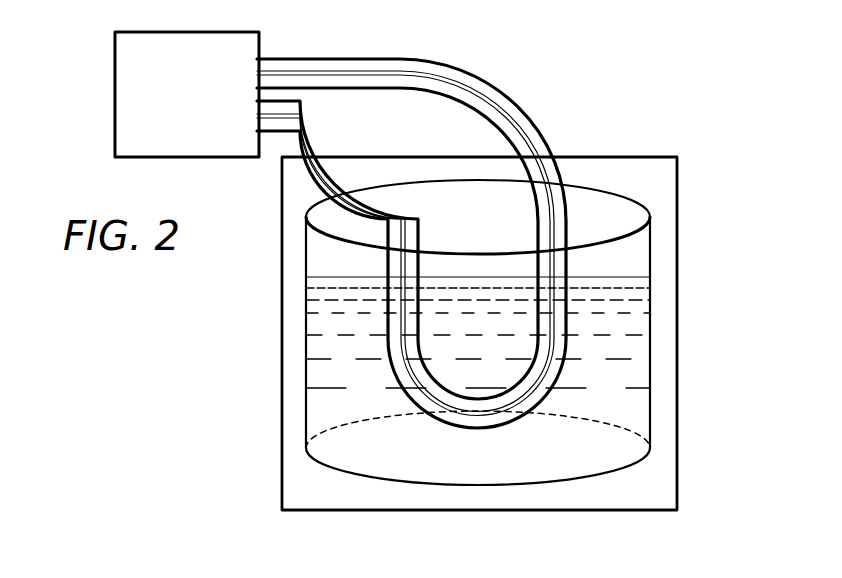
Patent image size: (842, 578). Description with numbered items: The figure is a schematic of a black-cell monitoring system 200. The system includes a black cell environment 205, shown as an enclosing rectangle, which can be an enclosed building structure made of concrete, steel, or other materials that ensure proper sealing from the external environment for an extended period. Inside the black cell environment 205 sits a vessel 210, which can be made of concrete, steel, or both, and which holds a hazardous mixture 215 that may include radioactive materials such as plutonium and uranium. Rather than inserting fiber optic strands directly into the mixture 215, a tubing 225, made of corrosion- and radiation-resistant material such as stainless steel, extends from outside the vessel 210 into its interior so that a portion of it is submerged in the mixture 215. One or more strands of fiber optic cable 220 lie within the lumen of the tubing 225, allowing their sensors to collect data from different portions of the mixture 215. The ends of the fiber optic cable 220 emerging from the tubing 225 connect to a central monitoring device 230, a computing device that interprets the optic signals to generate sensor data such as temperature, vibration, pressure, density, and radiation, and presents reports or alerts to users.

The black-cell monitoring system 200 is at (666, 95).
The black cell environment 205 is at (677, 182).
The vessel 210 is at (650, 247).
The hazardous mixture 215 is at (642, 343).
The fiber optic cable 220 is at (463, 75).
The tubing 225 is at (528, 117).
The central monitoring device 230 is at (115, 123).